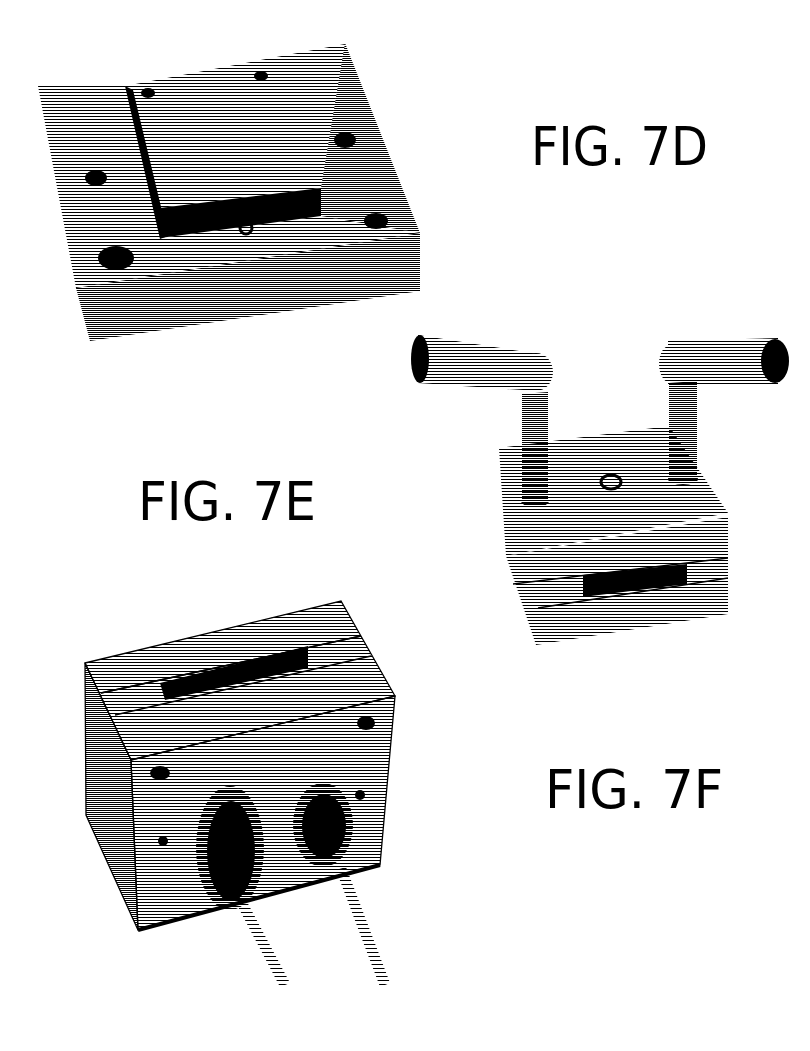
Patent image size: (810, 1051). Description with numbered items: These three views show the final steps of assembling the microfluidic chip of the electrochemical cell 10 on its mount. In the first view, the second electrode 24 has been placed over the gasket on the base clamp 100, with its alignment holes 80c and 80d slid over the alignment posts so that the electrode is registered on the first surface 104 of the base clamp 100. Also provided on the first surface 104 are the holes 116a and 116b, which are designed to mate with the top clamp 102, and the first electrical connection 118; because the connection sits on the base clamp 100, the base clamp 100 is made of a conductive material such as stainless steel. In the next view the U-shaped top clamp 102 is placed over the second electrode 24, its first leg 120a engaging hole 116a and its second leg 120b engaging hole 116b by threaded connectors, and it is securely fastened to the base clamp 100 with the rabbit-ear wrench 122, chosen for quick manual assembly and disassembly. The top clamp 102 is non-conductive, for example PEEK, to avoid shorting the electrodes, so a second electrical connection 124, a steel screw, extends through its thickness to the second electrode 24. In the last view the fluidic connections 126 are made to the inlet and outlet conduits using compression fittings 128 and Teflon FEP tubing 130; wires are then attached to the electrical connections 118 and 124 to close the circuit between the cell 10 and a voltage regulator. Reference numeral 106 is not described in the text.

In FIG. 7F, the electrochemical cell 10 is at (606, 463).
In FIG. 7E, the electrochemical cell 10 is at (141, 608).
In FIG. 7D, the second electrode 24 is at (240, 118).
In FIG. 7D, the alignment hole 80c is at (142, 84).
In FIG. 7D, the alignment hole 80d is at (253, 67).
In FIG. 7D, the base clamp 100 is at (377, 257).
In FIG. 7F, the base clamp 100 is at (625, 596).
In FIG. 7E, the base clamp 100 is at (157, 725).
In FIG. 7E, the top clamp 102 is at (232, 622).
In FIG. 7D, the first surface 104 is at (152, 253).
In FIG. 7E, the front face 106 is at (350, 752).
In FIG. 7D, the hole 116a is at (80, 176).
In FIG. 7E, the hole 116a is at (150, 836).
In FIG. 7D, the hole 116b is at (342, 132).
In FIG. 7E, the hole 116b is at (357, 787).
In FIG. 7D, the electrical connection 118 is at (238, 227).
In FIG. 7F, the first leg 120a is at (528, 593).
In FIG. 7E, the first leg 120a is at (110, 695).
In FIG. 7F, the second leg 120b is at (694, 557).
In FIG. 7E, the second leg 120b is at (330, 642).
In FIG. 7F, the wrench 122 is at (668, 362).
In FIG. 7F, the second electrical connection 124 is at (601, 477).
In FIG. 7E, the fluidic connections 126 is at (255, 880).
In FIG. 7E, the compression fittings 128 is at (237, 837).
In FIG. 7E, the tubing 130 is at (257, 903).